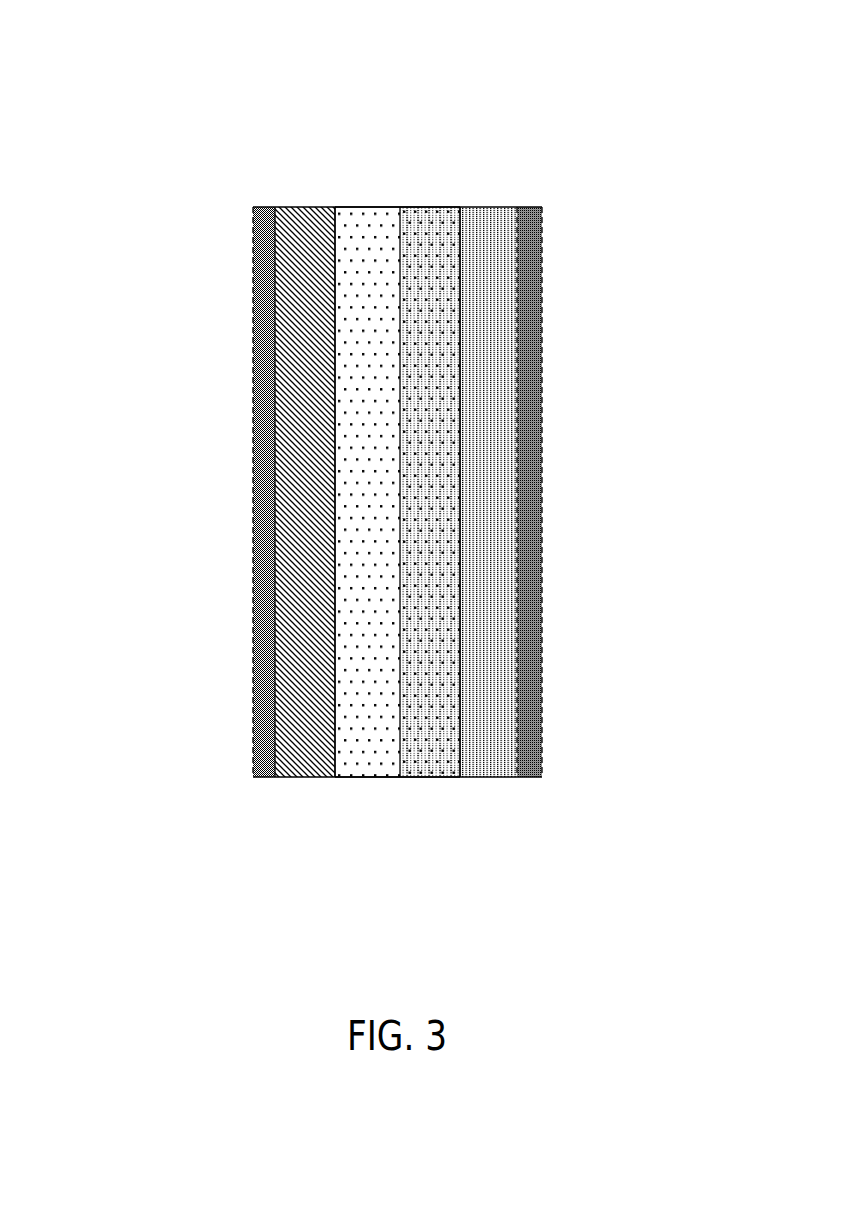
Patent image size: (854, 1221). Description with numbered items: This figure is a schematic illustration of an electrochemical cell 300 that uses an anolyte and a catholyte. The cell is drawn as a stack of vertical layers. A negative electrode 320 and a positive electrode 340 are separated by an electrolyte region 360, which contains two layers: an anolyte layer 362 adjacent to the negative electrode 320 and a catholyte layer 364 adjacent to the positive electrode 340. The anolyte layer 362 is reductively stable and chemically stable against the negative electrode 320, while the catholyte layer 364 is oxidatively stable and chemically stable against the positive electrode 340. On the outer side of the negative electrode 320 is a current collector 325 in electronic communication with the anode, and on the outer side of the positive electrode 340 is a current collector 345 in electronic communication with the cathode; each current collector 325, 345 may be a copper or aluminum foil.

The electrochemical cell 300 is at (172, 142).
The negative electrode 320 is at (293, 450).
The current collector 325 is at (263, 588).
The positive electrode 340 is at (493, 408).
The current collector 345 is at (525, 565).
The electrolyte region 360 is at (458, 197).
The anolyte layer 362 is at (367, 759).
The catholyte layer 364 is at (427, 757).